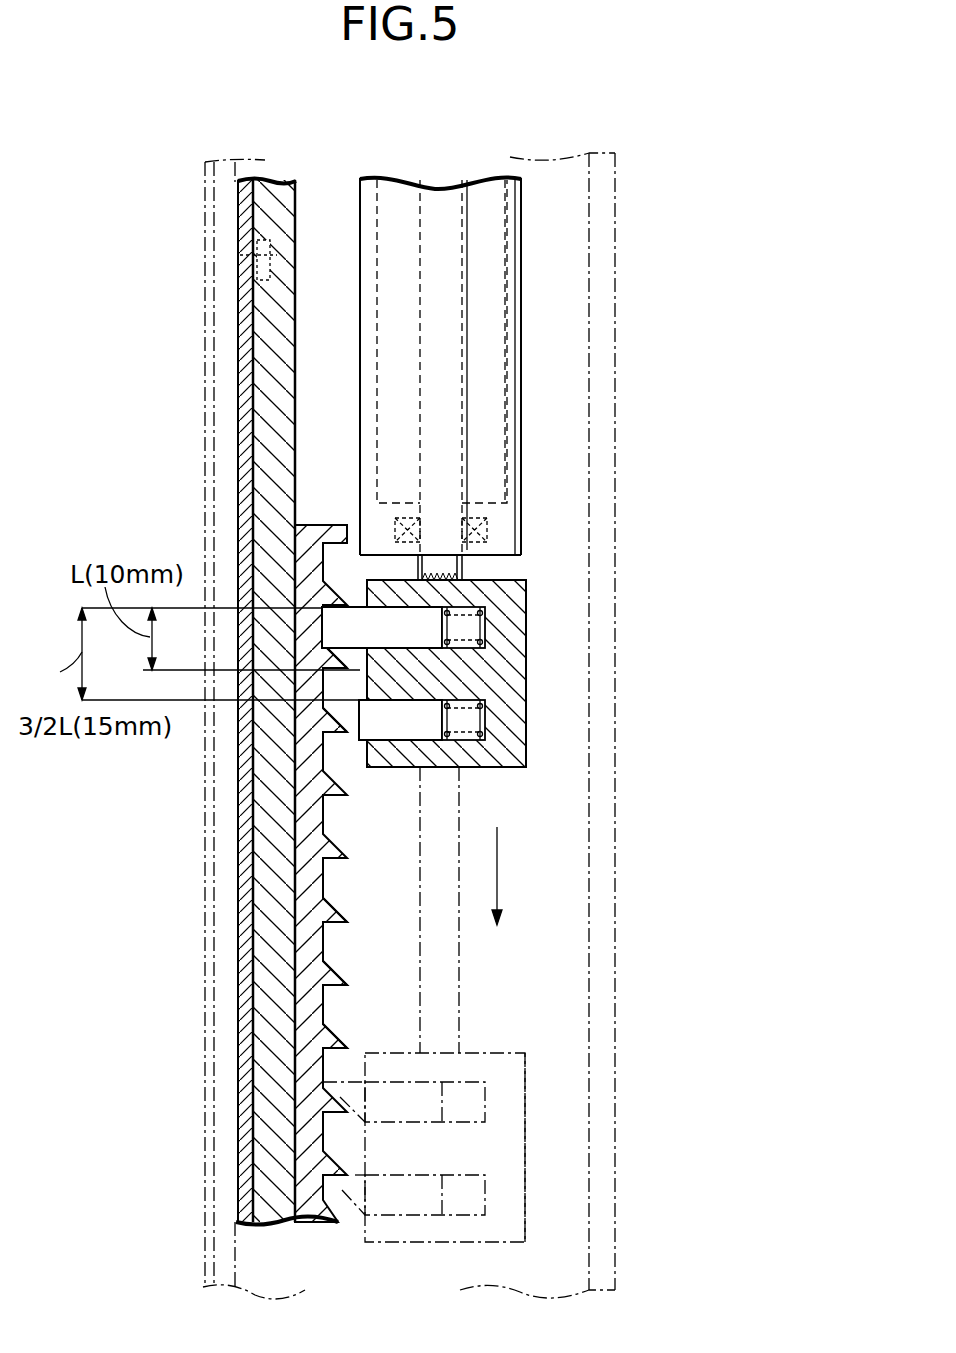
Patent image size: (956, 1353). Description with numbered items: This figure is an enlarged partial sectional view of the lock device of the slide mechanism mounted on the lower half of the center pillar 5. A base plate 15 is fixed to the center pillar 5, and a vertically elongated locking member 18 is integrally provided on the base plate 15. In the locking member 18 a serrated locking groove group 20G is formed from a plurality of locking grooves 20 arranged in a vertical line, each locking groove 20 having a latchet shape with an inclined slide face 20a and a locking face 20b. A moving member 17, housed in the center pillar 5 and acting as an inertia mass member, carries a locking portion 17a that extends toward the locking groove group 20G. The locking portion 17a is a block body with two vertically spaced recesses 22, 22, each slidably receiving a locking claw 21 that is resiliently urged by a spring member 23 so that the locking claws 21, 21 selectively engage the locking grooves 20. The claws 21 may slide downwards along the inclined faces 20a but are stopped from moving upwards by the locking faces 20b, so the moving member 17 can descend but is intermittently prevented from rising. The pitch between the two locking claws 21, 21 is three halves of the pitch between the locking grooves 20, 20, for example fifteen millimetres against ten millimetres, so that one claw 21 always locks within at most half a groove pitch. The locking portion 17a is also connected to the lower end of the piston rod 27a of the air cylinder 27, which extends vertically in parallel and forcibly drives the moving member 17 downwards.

The center pillar 5 is at (605, 342).
The base plate 15 is at (287, 220).
The moving member 17 is at (532, 613).
The locking portion 17a is at (513, 673).
The locking member 18 is at (303, 522).
The locking groove 20 is at (333, 902).
The locking groove group 20G is at (505, 945).
The inclined slide face 20a is at (340, 630).
The locking face 20b is at (338, 660).
The locking claw 21 is at (407, 623).
The recess 22 is at (487, 620).
The spring member 23 is at (487, 643).
The air cylinder 27 is at (521, 418).
The piston rod 27a is at (453, 293).